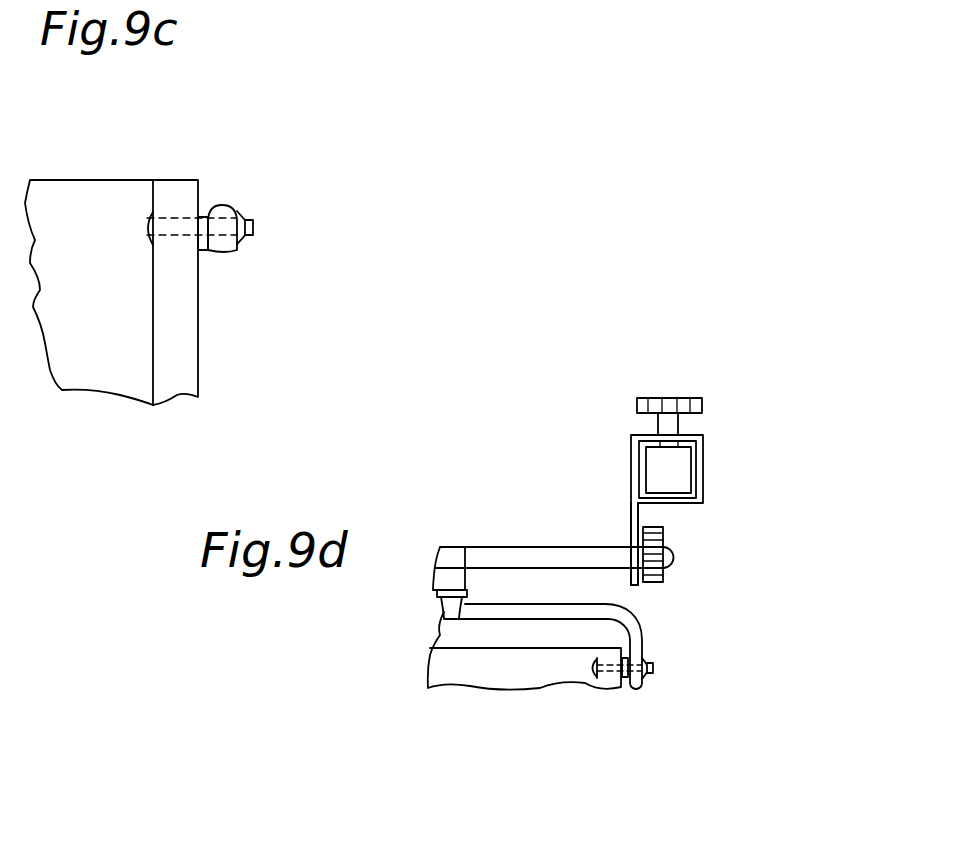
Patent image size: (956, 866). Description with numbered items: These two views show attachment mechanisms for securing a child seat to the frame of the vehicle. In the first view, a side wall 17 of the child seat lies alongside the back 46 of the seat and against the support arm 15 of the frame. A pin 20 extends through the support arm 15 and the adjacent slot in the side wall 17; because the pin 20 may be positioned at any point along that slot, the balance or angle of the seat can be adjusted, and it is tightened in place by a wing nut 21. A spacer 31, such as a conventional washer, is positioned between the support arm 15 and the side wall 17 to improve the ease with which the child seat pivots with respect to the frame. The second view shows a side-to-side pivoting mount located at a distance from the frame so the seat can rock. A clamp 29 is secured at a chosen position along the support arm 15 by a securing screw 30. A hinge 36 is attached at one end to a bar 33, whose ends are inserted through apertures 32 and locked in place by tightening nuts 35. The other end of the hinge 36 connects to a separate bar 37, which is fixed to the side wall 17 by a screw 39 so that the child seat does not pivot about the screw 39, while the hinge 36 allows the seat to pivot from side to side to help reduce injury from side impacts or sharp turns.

In FIG. 9C, the support arm 15 is at (220, 200).
In FIG. 9D, the support arm 15 is at (656, 483).
In FIG. 9C, the side wall 17 is at (172, 192).
In FIG. 9D, the side wall 17 is at (621, 683).
In FIG. 9C, the pin 20 is at (145, 227).
In FIG. 9C, the wing nut 21 is at (243, 205).
In FIG. 9D, the clamp 29 is at (705, 447).
In FIG. 9D, the securing screw 30 is at (637, 405).
In FIG. 9C, the spacer 31 is at (205, 257).
In FIG. 9D, the aperture 32 is at (637, 560).
In FIG. 9D, the bar 33 is at (677, 545).
In FIG. 9D, the nut 35 is at (655, 585).
In FIG. 9D, the hinge 36 is at (452, 575).
In FIG. 9D, the bar 37 is at (510, 612).
In FIG. 9D, the screw 39 is at (592, 665).
In FIG. 9C, the back 46 is at (75, 195).
In FIG. 9D, the back 46 is at (447, 667).